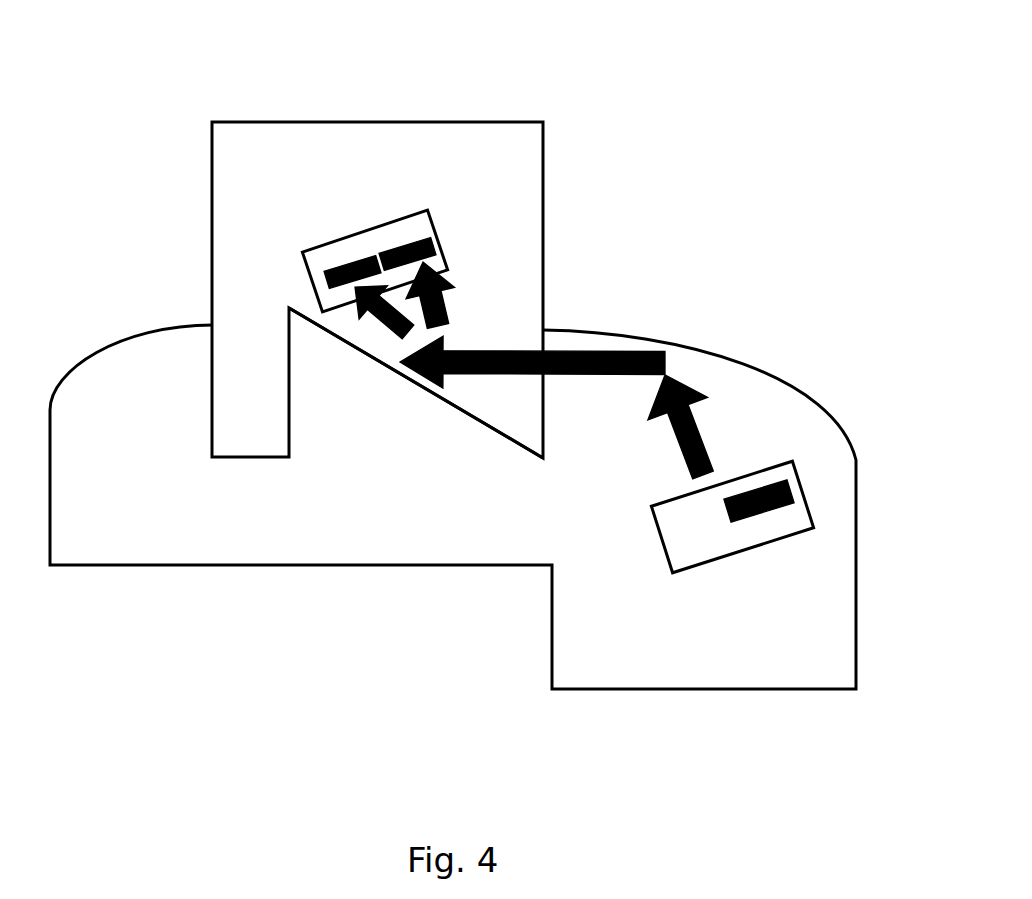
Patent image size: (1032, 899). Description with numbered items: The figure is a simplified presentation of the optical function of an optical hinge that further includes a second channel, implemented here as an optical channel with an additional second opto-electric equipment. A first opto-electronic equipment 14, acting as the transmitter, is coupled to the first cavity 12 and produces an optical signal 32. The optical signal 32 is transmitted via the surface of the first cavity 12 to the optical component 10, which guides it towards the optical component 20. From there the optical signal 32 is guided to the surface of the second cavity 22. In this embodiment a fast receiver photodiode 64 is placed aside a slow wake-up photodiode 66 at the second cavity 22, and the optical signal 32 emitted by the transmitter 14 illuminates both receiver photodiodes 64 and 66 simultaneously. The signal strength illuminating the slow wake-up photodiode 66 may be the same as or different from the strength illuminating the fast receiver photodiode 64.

The optical component 10 is at (818, 654).
The first cavity 12 is at (793, 513).
The first opto-electronic equipment 14 is at (790, 502).
The optical component 20 is at (297, 138).
The second cavity 22 is at (318, 270).
The optical signal 32 is at (430, 383).
The fast receiver photodiode 64 is at (357, 260).
The slow wake-up photodiode 66 is at (427, 210).